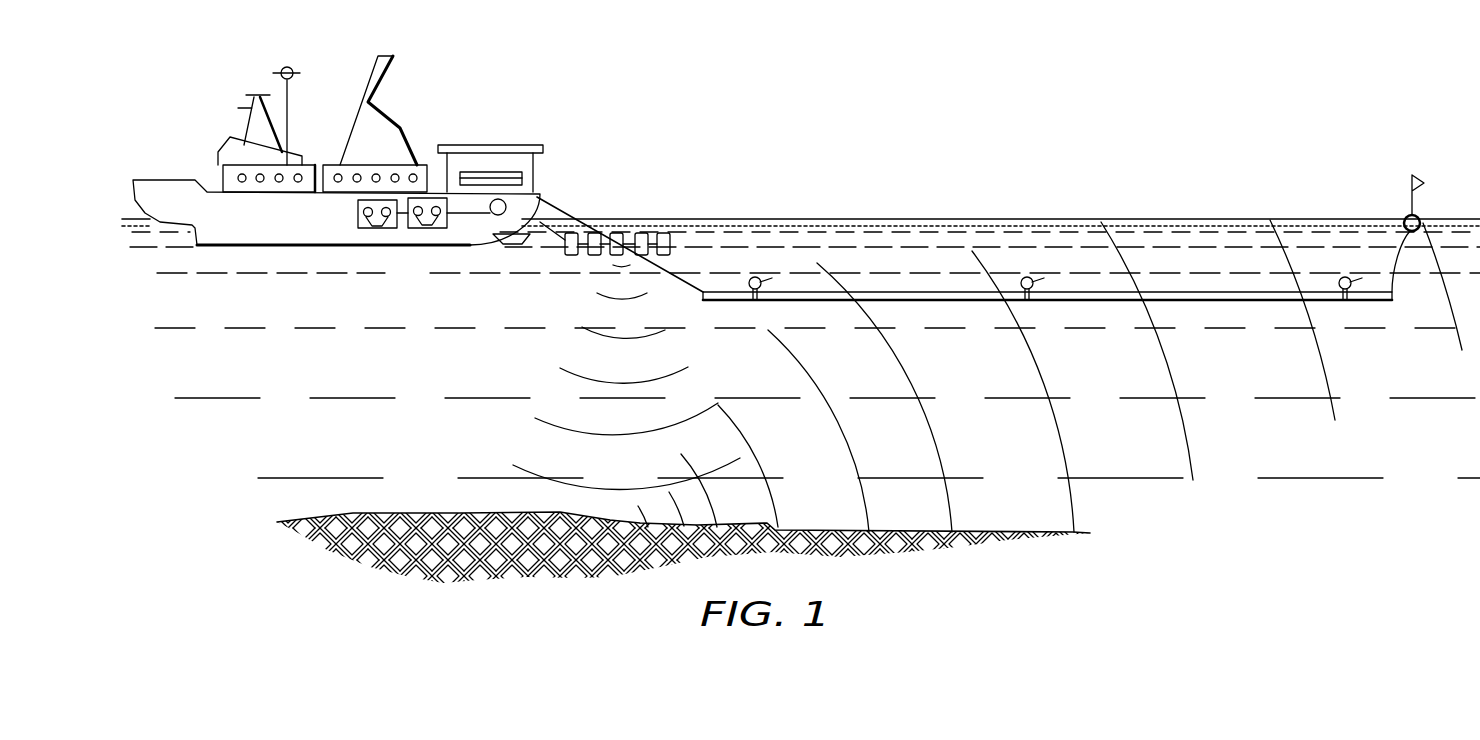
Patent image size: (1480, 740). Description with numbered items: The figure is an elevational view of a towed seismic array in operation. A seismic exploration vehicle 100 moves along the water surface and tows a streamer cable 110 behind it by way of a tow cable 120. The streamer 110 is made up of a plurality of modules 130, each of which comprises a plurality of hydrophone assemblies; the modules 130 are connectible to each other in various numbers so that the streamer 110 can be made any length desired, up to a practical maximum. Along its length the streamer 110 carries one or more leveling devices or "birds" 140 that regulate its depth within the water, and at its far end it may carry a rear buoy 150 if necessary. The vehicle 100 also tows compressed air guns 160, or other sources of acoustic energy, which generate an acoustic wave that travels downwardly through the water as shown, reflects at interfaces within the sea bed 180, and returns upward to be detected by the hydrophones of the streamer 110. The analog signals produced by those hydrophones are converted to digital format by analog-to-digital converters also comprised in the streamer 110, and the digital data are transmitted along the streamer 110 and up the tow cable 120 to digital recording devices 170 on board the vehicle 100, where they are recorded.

The seismic exploration vehicle 100 is at (177, 192).
The streamer cable 110 is at (1258, 304).
The tow cable 120 is at (575, 217).
The module 130 is at (975, 301).
The leveling device 140 is at (757, 277).
The rear buoy 150 is at (1405, 217).
The compressed air gun 160 is at (663, 233).
The digital recording device 170 is at (358, 222).
The sea bed 180 is at (367, 517).